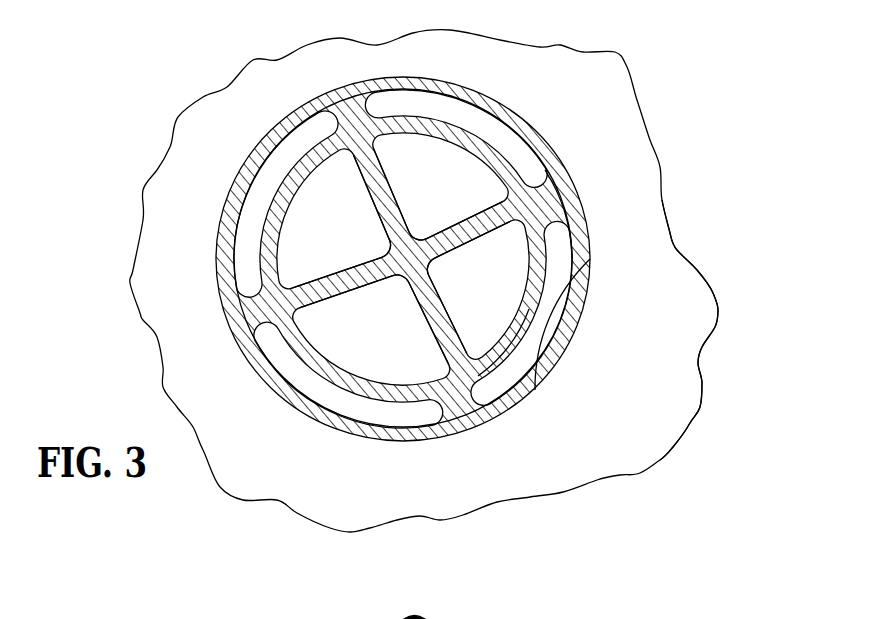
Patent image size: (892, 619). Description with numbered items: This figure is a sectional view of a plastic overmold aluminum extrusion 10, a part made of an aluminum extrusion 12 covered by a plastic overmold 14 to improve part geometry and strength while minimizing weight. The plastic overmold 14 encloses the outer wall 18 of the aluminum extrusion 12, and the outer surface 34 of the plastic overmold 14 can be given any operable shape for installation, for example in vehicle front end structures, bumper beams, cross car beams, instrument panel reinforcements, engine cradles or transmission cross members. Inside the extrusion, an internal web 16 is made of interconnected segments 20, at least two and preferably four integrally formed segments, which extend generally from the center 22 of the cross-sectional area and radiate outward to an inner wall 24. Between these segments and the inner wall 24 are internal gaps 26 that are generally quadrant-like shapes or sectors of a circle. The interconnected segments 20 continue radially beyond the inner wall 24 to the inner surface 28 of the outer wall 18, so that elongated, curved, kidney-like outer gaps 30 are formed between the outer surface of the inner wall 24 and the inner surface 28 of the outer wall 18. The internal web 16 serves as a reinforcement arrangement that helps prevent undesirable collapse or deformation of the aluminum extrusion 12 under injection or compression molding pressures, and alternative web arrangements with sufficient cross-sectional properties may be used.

The plastic overmold aluminum extrusion 10 is at (700, 90).
The aluminum extrusion 12 is at (598, 221).
The plastic overmold 14 is at (766, 359).
The internal web 16 is at (284, 171).
The outer wall 18 is at (586, 312).
The interconnected segments 20 is at (379, 151).
The center 22 is at (409, 251).
The inner wall 24 is at (490, 357).
The internal gaps 26 is at (403, 259).
The inner surface 28 is at (560, 307).
The outer gaps 30 is at (252, 202).
The outer surface 34 is at (691, 426).